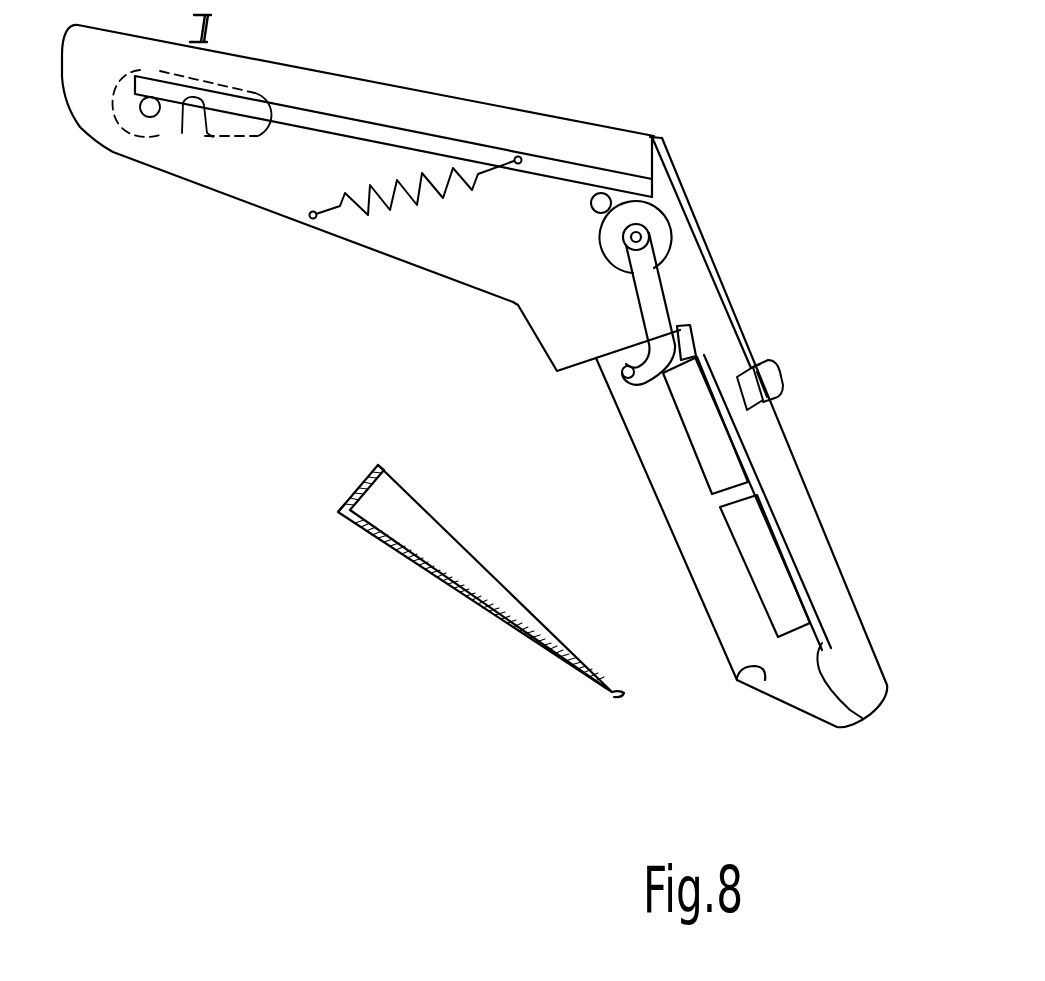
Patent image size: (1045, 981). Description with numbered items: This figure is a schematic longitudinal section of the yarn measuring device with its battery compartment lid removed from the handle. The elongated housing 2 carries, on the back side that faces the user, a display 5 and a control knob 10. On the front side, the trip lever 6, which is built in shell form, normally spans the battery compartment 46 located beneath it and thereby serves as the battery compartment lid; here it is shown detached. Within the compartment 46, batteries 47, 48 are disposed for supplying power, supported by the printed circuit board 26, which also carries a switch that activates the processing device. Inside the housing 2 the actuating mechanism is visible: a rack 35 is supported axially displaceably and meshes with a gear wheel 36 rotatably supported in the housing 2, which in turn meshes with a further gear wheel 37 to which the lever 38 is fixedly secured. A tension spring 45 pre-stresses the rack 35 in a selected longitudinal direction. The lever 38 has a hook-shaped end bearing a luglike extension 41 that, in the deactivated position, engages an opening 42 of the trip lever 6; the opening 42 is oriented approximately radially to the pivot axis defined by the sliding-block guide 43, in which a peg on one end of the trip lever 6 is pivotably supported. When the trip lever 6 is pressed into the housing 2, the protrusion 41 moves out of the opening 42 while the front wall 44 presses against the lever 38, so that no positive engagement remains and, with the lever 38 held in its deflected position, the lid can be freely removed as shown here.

The housing 2 is at (762, 427).
The display 5 is at (706, 253).
The trip lever 6 is at (437, 582).
The control knob 10 is at (783, 369).
The printed circuit board 26 is at (862, 718).
The rack 35 is at (390, 137).
The gear wheel 36 is at (592, 203).
The gear wheel 37 is at (601, 243).
The lever 38 is at (641, 292).
The luglike extension 41 is at (628, 380).
The opening 42 is at (350, 488).
The sliding-block guide 43 is at (747, 690).
The front wall 44 is at (368, 468).
The tension spring 45 is at (423, 197).
The battery compartment 46 is at (668, 470).
The battery 47 is at (718, 441).
The battery 48 is at (778, 576).